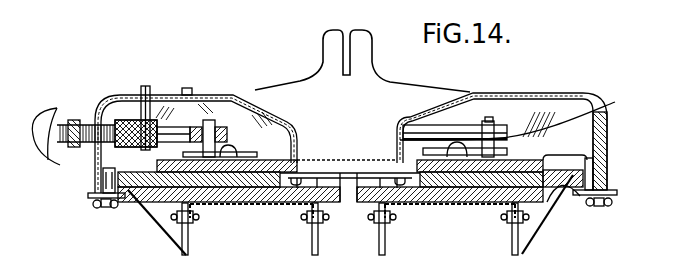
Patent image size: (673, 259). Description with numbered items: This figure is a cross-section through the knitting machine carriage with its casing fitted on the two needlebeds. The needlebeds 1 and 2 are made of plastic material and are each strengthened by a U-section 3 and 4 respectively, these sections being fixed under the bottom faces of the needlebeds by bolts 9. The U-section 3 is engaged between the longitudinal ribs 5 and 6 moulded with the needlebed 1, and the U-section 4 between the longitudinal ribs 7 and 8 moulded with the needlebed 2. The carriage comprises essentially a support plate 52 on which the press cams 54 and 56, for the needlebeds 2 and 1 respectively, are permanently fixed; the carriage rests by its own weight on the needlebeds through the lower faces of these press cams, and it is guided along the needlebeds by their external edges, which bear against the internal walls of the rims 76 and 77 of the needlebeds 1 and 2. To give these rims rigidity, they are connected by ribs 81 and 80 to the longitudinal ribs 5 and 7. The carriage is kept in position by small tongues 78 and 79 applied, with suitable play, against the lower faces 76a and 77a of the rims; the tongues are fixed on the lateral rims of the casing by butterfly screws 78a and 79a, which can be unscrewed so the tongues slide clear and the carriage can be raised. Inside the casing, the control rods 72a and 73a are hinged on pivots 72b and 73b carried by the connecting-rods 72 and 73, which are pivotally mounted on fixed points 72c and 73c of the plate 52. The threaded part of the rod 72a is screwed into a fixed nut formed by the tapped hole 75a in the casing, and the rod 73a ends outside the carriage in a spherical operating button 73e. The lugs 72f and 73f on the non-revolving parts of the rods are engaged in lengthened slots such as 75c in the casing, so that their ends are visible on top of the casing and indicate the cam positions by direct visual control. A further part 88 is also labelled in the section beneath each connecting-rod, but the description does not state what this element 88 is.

The needlebed 1 is at (284, 204).
The needlebed 2 is at (432, 204).
The U-section 3 is at (263, 203).
The U-section 4 is at (453, 203).
The longitudinal rib 5 is at (194, 211).
The longitudinal rib 6 is at (320, 244).
The longitudinal rib 7 is at (536, 233).
The longitudinal rib 8 is at (377, 233).
The bolt 9 is at (192, 219).
The support plate 52 is at (598, 113).
The press cam 54 is at (496, 200).
The press cam 56 is at (239, 200).
The connecting-rod 72 is at (535, 138).
The control rod 72a is at (452, 127).
The pivot 72b is at (500, 140).
The fixed point 72c is at (493, 120).
The lug 72f is at (190, 97).
The connecting-rod 73 is at (284, 140).
The control rod 73a is at (210, 98).
The pivot 73b is at (248, 95).
The fixed point 73c is at (246, 150).
The operating button 73e is at (88, 176).
The lug 73f is at (168, 125).
The tapped hole 75a is at (97, 148).
The lengthened slot 75c is at (225, 94).
The rim 76 is at (133, 196).
The lower face 76a is at (112, 198).
The rim 77 is at (599, 163).
The lower face 77a is at (580, 197).
The tongue 78 is at (95, 206).
The butterfly screw 78a is at (90, 193).
The tongue 79 is at (614, 203).
The butterfly screw 79a is at (612, 178).
The rib 80 is at (545, 216).
The rib 81 is at (168, 232).
The nut 88 is at (291, 156).